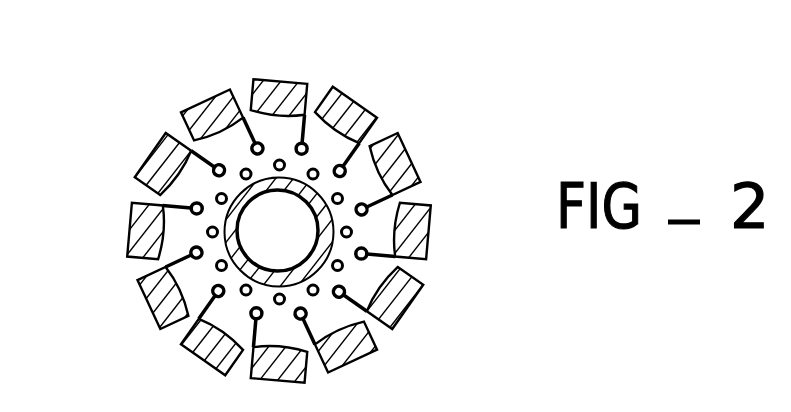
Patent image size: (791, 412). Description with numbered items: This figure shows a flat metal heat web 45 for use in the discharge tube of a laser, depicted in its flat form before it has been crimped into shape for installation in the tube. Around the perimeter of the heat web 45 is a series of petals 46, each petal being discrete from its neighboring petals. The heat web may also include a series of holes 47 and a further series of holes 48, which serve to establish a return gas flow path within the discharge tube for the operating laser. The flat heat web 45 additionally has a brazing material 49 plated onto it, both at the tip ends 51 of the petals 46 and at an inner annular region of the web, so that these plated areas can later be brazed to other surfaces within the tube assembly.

The heat web 45 is at (156, 112).
The petals 46 is at (352, 105).
The holes 47 is at (329, 259).
The holes 48 is at (402, 165).
The brazing material 49 is at (208, 110).
The tip ends 51 is at (272, 77).